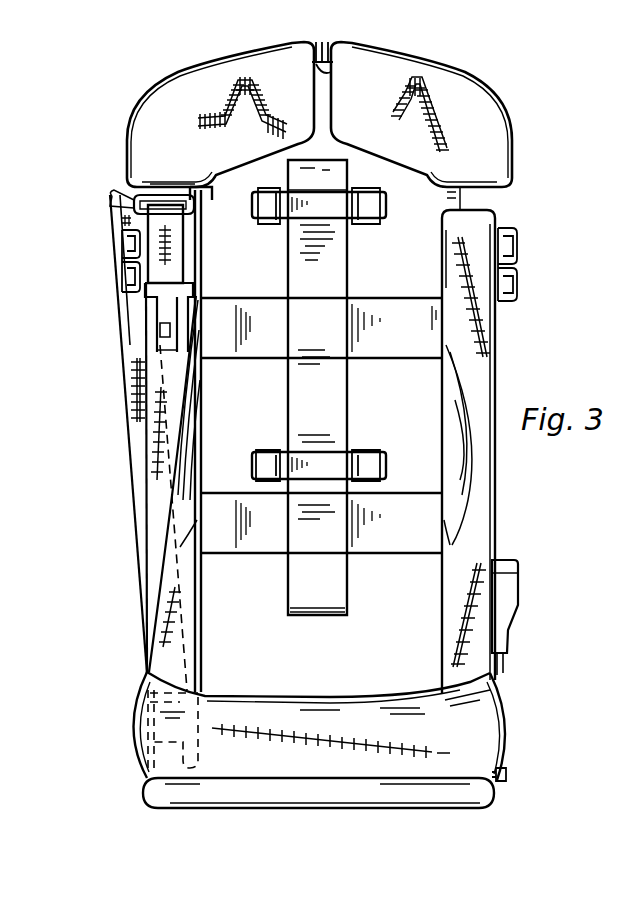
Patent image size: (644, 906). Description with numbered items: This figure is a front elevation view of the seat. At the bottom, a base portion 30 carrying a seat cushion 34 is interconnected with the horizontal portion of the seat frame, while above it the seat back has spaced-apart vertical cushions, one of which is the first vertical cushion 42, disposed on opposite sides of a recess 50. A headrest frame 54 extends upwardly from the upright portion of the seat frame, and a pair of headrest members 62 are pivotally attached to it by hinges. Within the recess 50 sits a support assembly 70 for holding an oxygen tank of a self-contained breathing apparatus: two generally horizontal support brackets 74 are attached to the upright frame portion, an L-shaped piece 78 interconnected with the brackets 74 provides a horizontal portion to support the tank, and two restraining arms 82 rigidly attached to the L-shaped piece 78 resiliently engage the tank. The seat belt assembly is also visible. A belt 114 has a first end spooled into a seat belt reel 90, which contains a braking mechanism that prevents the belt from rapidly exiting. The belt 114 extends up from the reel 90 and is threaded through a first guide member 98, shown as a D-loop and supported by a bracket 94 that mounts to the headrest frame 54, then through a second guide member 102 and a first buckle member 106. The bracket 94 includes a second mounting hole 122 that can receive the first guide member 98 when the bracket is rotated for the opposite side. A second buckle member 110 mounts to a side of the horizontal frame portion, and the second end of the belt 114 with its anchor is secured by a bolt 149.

The base portion 30 is at (358, 798).
The seat cushion 34 is at (505, 713).
The first vertical cushion 42 is at (486, 328).
The recess 50 is at (385, 280).
The headrest frame 54 is at (333, 73).
The headrest members 62 is at (158, 93).
The support assembly 70 is at (272, 279).
The support brackets 74 is at (358, 353).
The L-shaped piece 78 is at (330, 616).
The restraining arms 82 is at (258, 208).
The seat belt reel 90 is at (136, 782).
The bracket 94 is at (120, 330).
The first guide member 98 is at (110, 193).
The second guide member 102 is at (198, 184).
The first buckle member 106 is at (190, 288).
The second buckle member 110 is at (506, 598).
The belt 114 is at (130, 428).
The second mounting hole 122 is at (127, 357).
The bolt 149 is at (508, 776).